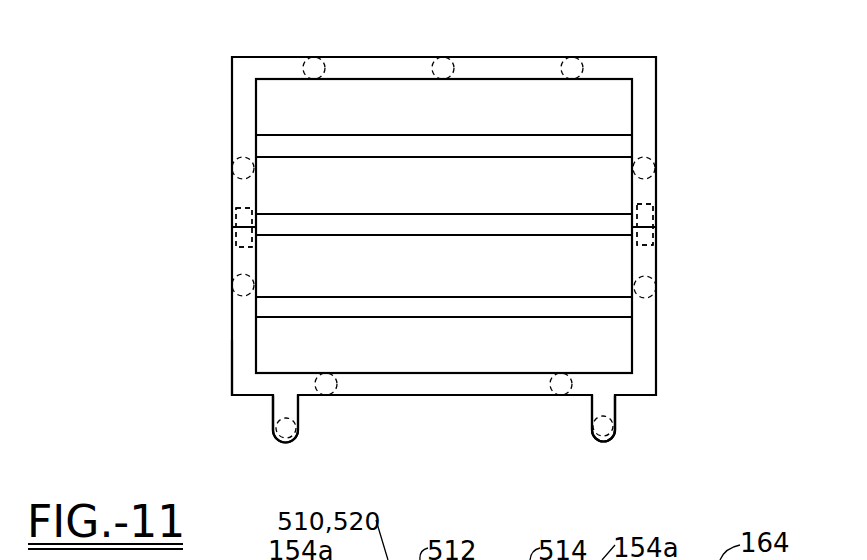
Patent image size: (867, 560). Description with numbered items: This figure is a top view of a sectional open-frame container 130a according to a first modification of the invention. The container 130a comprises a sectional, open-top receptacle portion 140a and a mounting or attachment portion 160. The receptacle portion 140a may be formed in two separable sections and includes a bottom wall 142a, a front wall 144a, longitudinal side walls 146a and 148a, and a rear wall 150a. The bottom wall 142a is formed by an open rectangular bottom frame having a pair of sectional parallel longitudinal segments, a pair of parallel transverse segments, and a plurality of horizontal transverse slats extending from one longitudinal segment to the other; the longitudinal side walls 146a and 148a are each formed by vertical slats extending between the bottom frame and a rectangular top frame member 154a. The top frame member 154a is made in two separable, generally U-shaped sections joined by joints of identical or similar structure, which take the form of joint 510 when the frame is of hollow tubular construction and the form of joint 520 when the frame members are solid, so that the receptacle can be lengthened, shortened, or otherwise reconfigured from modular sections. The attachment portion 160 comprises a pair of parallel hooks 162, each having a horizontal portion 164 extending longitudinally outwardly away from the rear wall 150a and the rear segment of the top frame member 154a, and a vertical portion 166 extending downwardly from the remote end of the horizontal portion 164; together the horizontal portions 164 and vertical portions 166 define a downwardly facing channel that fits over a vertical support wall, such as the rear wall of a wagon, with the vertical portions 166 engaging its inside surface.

The container 130a is at (226, 77).
The receptacle portion 140a is at (228, 132).
The bottom wall 142a is at (593, 143).
The front wall 144a is at (449, 54).
The longitudinal side wall 146a is at (235, 285).
The longitudinal side wall 148a is at (656, 289).
The rear wall 150a is at (555, 398).
The top frame member 154a is at (243, 346).
The attachment portion 160 is at (268, 443).
The hook 162 is at (622, 432).
The horizontal portion 164 is at (283, 411).
The vertical portion 166 is at (283, 442).
The joint 510 is at (226, 220).
The joint 520 is at (444, 225).